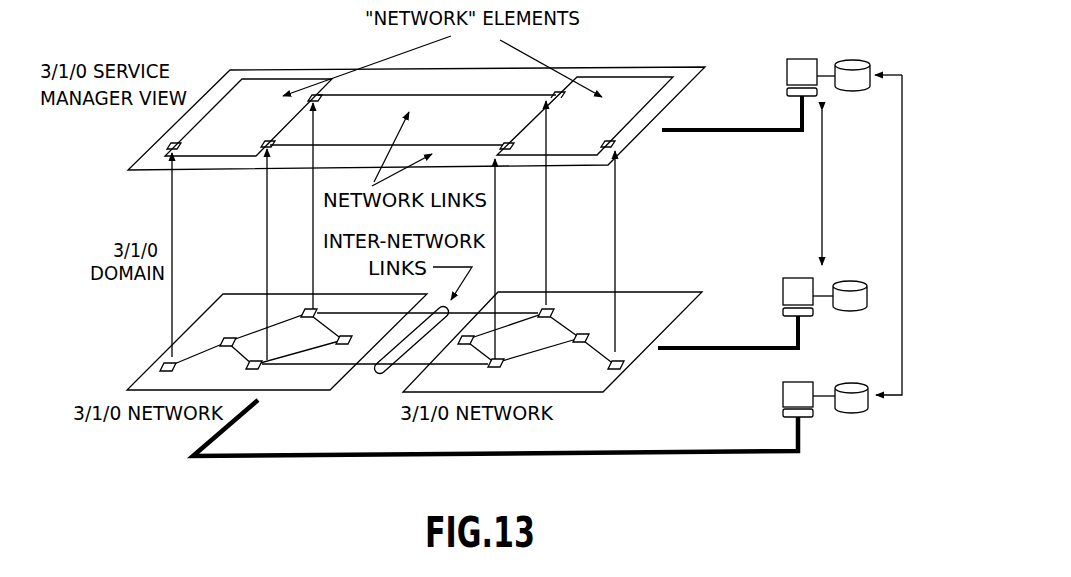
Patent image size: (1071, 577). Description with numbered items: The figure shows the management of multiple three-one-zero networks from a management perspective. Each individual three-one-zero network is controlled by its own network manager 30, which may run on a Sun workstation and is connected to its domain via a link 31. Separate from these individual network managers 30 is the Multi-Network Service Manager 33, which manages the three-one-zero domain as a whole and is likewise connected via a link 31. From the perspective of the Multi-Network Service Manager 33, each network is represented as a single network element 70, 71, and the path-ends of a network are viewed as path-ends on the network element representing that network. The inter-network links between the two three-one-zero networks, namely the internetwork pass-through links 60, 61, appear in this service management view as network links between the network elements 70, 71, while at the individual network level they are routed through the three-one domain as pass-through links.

The network element 70 is at (266, 88).
The network element 71 is at (626, 82).
The internetwork pass-through link 60 is at (470, 310).
The internetwork pass-through link 61 is at (366, 368).
The link 31 is at (734, 127).
The Multi-Network Service Manager 33 is at (805, 60).
The 46020 network manager 30 is at (783, 287).